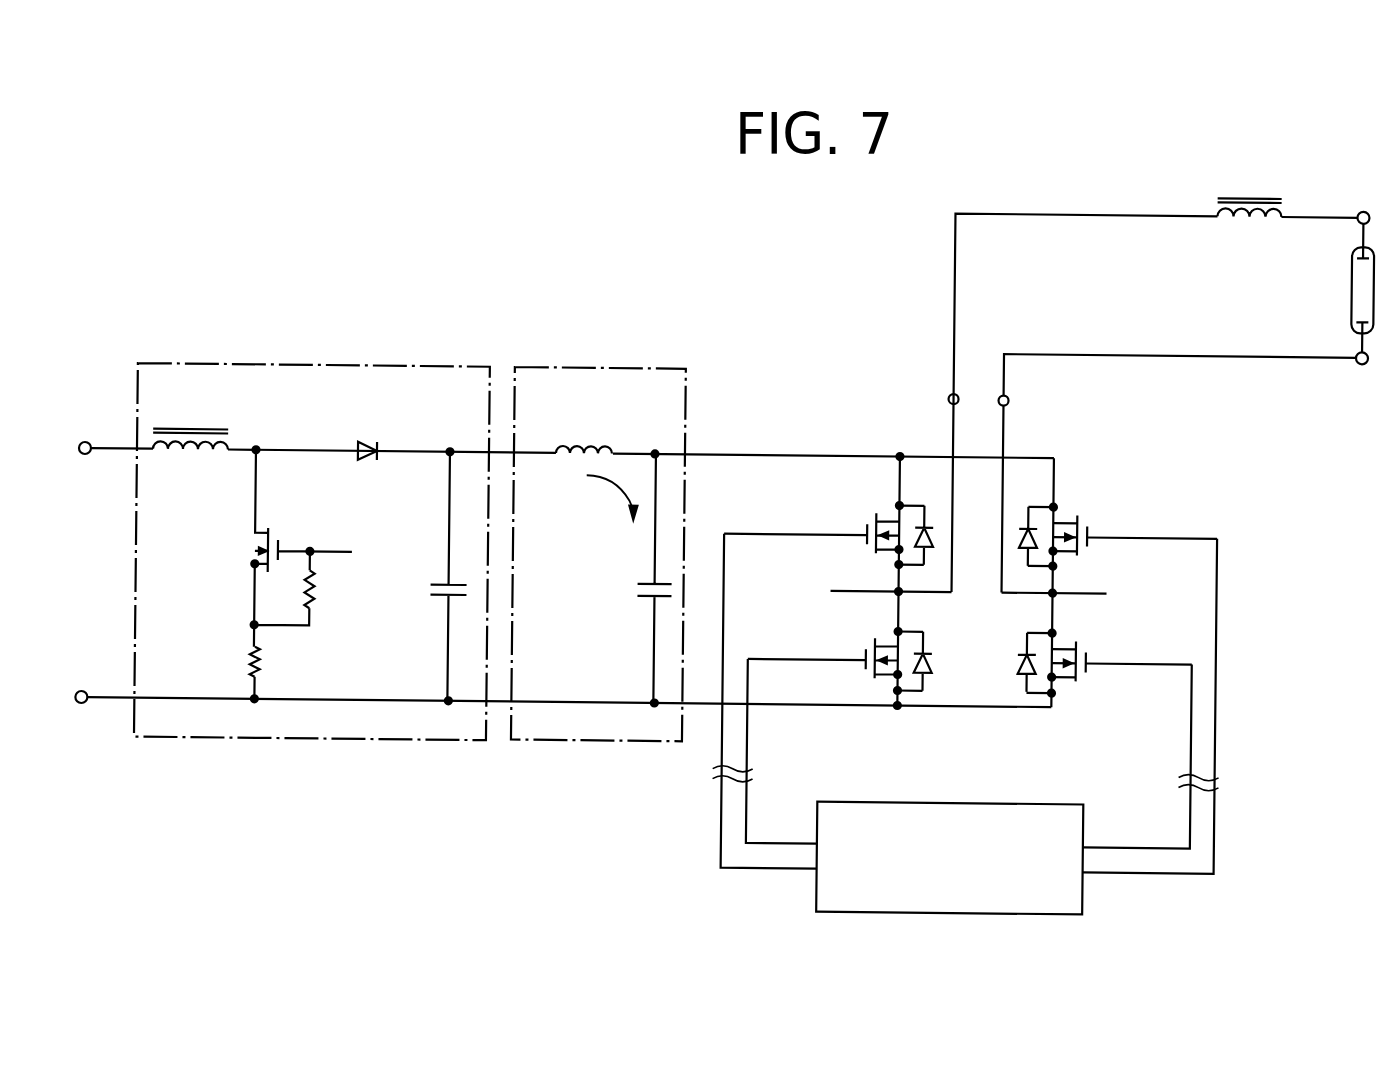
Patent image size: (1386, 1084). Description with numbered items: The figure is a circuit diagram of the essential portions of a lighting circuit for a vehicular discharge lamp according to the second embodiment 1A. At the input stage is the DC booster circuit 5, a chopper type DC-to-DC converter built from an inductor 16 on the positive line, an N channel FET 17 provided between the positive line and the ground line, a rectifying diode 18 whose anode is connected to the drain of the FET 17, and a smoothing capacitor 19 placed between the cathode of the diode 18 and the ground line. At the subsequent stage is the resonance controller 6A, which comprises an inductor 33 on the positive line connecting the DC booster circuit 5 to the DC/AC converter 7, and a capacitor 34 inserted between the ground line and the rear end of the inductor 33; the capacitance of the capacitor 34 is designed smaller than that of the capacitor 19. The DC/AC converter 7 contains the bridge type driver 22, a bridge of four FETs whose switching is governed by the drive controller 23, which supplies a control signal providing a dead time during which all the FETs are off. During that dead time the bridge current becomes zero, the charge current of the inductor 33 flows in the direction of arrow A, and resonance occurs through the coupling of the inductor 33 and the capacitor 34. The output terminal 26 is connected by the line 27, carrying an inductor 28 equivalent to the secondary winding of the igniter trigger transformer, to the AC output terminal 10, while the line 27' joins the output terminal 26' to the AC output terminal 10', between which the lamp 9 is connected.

The second embodiment 1A is at (604, 247).
The DC booster circuit 5 is at (306, 360).
The resonance controller 6A is at (627, 361).
The DC/AC converter 7 is at (823, 408).
The lamp 9 is at (1351, 275).
The AC output terminal 10 is at (1360, 184).
The AC output terminal 10' is at (1357, 391).
The inductor 16 is at (185, 453).
The N channel FET 17 is at (253, 540).
The rectifying diode 18 is at (367, 462).
The smoothing capacitor 19 is at (430, 592).
The bridge type driver 22 is at (951, 630).
The drive controller 23 is at (950, 794).
The output terminal 26 is at (919, 383).
The output terminal 26' is at (1040, 408).
The line 27 is at (1155, 370).
The line 27' is at (1179, 440).
The inductor 28 is at (1253, 210).
The inductor 33 is at (586, 438).
The capacitor 34 is at (634, 591).